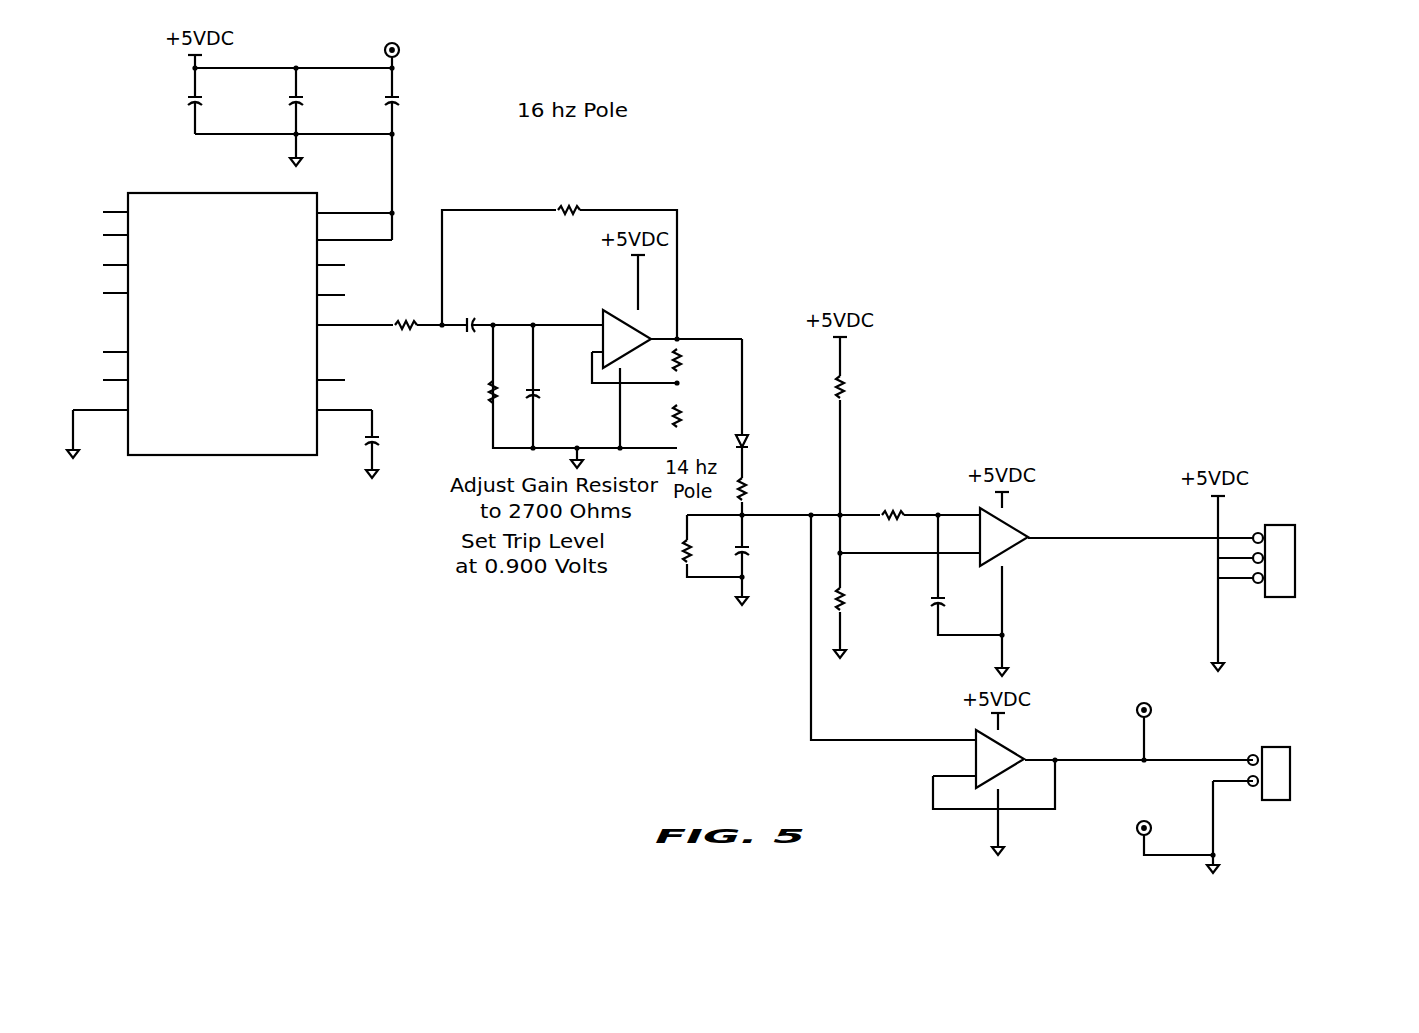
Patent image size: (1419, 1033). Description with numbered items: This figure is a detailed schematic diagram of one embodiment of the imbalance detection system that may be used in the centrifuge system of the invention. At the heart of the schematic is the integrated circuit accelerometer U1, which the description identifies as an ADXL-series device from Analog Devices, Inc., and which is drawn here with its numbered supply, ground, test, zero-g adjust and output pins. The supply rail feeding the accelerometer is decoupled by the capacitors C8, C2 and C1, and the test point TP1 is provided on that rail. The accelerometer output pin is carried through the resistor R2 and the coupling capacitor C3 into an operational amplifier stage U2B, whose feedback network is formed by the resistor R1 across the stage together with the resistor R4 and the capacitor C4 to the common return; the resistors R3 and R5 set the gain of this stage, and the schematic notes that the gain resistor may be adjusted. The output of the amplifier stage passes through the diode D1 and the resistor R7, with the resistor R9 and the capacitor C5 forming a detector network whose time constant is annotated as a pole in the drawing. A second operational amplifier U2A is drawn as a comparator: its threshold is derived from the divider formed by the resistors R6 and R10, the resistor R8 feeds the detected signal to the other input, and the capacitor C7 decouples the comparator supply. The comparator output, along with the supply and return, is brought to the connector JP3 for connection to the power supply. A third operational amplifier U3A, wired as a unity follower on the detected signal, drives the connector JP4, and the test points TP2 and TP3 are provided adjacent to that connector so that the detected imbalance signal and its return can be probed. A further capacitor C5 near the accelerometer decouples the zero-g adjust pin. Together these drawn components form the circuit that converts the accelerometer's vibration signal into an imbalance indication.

The ADXL15a accelerometer U1 is at (254, 322).
The capacitor 0.1uF C8 is at (220, 100).
The capacitor 0.1uF C2 is at (321, 101).
The capacitor 2.2uF 15V C1 is at (419, 105).
The test point TP1 is at (394, 34).
The resistor 68.1K R1 is at (570, 184).
The resistor 68.1K R2 is at (411, 301).
The capacitor 0.1uF C3 is at (473, 302).
The resistor 68.1K R4 is at (464, 386).
The capacitor 0.1uF C4 is at (558, 394).
The capacitor C5 is at (583, 507).
The op-amp lmv358 U2B is at (611, 312).
The resistor 15K R3 is at (700, 366).
The resistor 2740 R5 is at (700, 420).
The diode 1N4148 D1 is at (781, 408).
The resistor 4.99K R7 is at (770, 489).
The resistor 330K R9 is at (656, 545).
The resistor 2.2K 5% R6 is at (866, 388).
The resistor 10K 5% R8 is at (885, 485).
The resistor 499 R10 is at (863, 602).
The capacitor 0.1uF C7 is at (964, 601).
The op-amp lmv358 comparator U2A is at (1034, 532).
The connector MTA-100 to J4 power supply JP3 is at (1325, 562).
The op-amp lmv358 buffer U3A is at (1028, 734).
The test point TP2 is at (1140, 710).
The test point TP3 is at (1159, 822).
The connector MTA-100 JP4 is at (1284, 773).